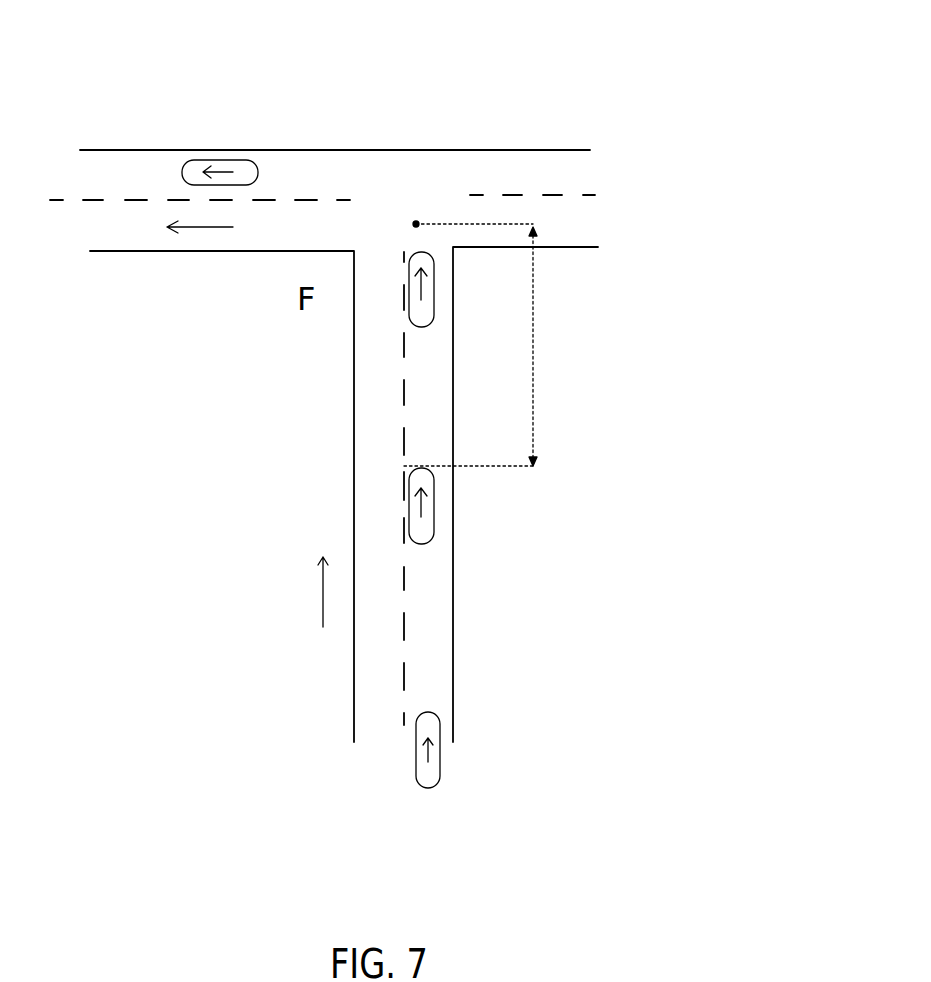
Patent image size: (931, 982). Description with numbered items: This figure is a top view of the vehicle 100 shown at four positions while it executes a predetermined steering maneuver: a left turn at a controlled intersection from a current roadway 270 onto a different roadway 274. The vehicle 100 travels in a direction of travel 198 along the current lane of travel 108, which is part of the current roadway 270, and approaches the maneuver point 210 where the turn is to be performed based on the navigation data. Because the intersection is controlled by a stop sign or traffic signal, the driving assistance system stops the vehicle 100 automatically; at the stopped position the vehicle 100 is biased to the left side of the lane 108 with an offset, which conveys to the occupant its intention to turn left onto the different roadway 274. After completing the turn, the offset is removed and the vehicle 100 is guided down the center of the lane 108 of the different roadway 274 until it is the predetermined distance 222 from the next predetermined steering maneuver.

The vehicle 100 is at (238, 160).
The lane 108 is at (122, 175).
The direction of travel 198 is at (202, 228).
The maneuver point 210 is at (416, 222).
The predetermined distance 222 is at (538, 357).
The current roadway 270 is at (353, 482).
The different roadway 274 is at (153, 148).